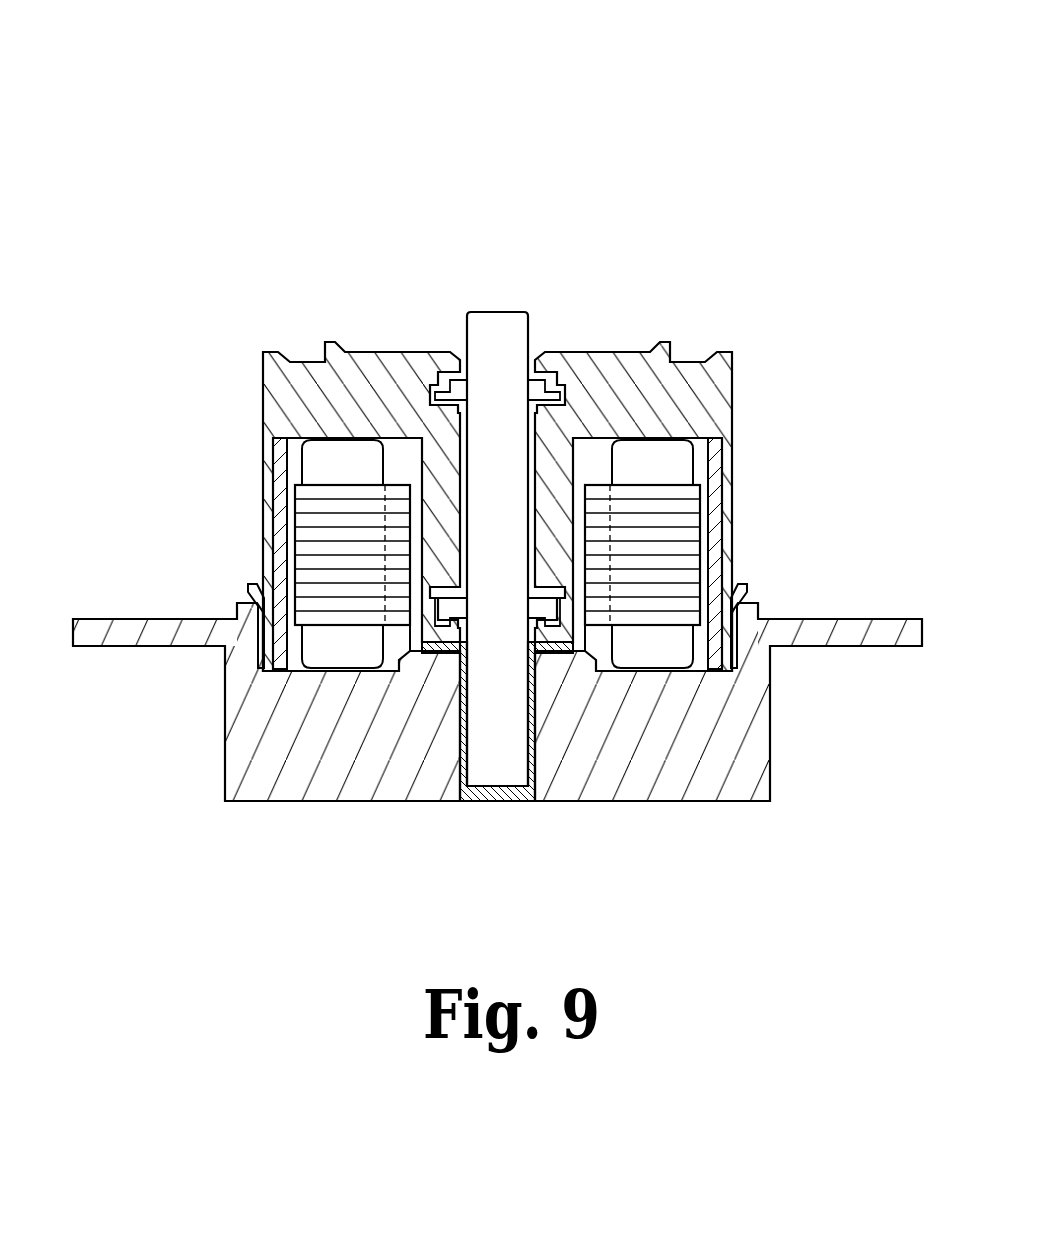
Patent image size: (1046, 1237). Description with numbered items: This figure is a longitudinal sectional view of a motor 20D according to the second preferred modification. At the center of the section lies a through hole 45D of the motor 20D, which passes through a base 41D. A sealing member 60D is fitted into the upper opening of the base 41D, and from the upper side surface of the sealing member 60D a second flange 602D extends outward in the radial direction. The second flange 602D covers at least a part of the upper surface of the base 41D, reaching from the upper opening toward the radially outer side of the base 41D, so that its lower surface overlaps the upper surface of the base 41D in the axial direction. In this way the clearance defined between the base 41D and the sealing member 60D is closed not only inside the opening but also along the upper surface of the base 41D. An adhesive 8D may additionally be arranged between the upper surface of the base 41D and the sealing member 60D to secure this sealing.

The motor 20D is at (597, 107).
The adhesive 8D is at (425, 657).
The through hole 45D is at (490, 638).
The base 41D is at (742, 778).
The sealing member 60D is at (495, 803).
The second flange 602D is at (445, 657).